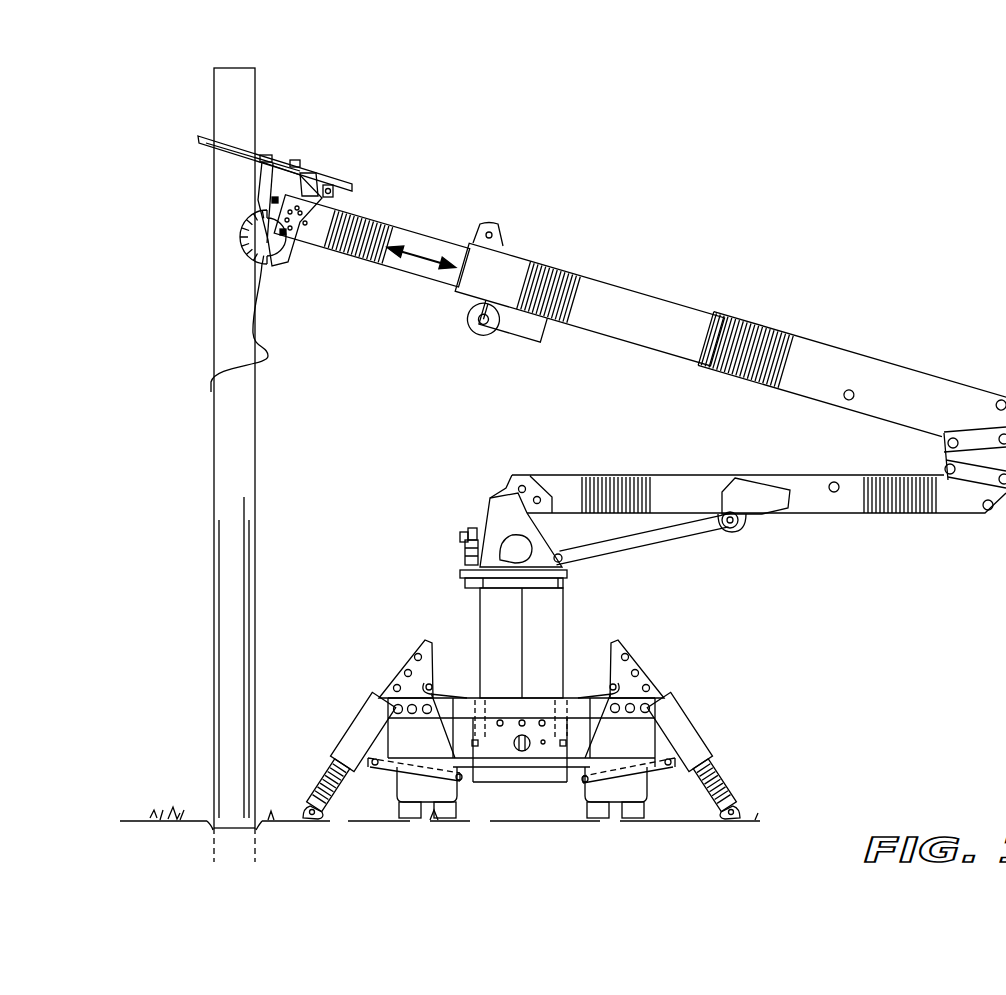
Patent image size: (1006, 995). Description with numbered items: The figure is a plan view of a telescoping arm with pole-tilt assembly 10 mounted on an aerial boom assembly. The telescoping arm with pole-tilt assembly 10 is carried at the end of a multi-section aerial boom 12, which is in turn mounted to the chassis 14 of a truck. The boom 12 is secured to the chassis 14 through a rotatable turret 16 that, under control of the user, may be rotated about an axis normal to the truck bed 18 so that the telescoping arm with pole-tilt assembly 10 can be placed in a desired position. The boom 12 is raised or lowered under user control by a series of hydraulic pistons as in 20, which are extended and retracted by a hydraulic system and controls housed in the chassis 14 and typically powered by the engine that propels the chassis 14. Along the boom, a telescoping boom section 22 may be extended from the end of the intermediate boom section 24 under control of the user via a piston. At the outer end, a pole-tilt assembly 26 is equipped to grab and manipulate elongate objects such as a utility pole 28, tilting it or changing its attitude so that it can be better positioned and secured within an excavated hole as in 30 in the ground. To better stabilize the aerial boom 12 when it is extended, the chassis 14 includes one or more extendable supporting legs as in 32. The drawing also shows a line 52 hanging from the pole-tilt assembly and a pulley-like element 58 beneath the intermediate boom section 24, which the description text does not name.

The telescoping arm with pole-tilt assembly 10 is at (313, 143).
The multi-section aerial boom 12 is at (739, 320).
The chassis 14 is at (668, 735).
The rotatable turret 16 is at (462, 580).
The truck bed 18 is at (568, 698).
The hydraulic piston 20 is at (870, 468).
The telescoping boom section 22 is at (398, 222).
The intermediate boom section 24 is at (583, 277).
The pole-tilt assembly 26 is at (332, 173).
The utility pole 28 is at (247, 92).
The excavated hole 30 is at (203, 820).
The extendable supporting leg 32 is at (348, 733).
The tether line 52 is at (264, 297).
The pulley 58 is at (513, 338).